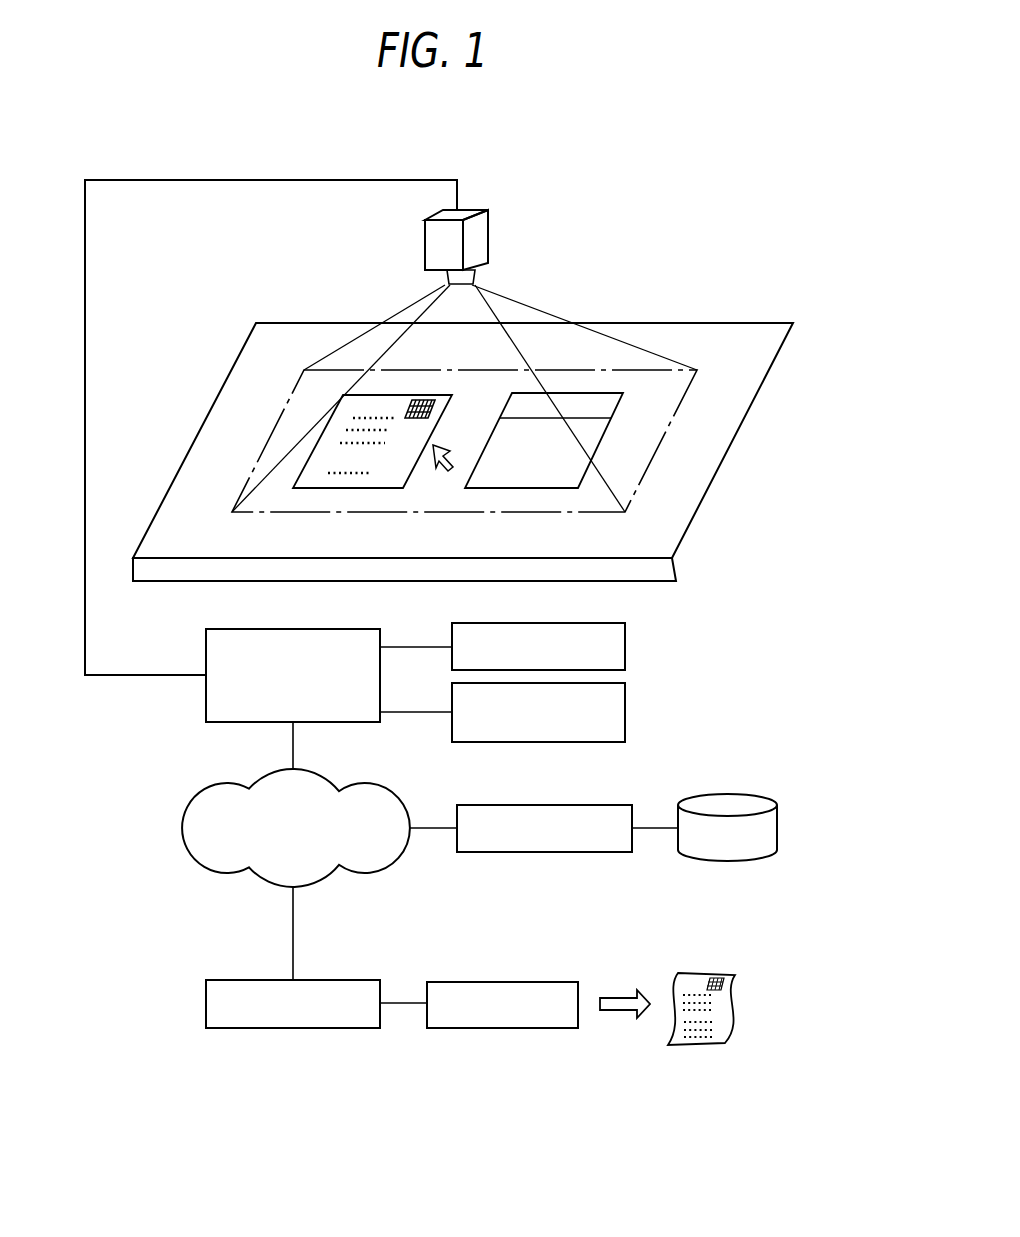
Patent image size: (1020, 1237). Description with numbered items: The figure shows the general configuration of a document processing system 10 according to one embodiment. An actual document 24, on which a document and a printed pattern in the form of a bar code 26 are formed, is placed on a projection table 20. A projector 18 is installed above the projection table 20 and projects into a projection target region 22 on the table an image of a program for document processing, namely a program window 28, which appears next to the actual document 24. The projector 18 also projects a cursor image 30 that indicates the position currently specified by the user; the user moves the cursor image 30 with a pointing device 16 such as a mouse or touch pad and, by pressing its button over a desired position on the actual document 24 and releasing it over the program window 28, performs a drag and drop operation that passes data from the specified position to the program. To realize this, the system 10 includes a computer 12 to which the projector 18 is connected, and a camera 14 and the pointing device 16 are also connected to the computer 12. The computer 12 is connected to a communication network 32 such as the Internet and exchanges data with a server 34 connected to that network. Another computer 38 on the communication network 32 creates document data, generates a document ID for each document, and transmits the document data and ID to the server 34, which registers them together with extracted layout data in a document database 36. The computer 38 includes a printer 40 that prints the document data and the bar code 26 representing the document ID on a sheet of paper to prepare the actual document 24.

The document processing system 10 is at (142, 926).
The computer 12 is at (206, 655).
The camera 14 is at (625, 645).
The pointing device 16 is at (625, 705).
The projector 18 is at (490, 233).
The projection table 20 is at (207, 415).
The projection target region 22 is at (668, 428).
The actual document 24 is at (365, 488).
The bar code 26 is at (430, 396).
The program window 28 is at (560, 488).
The cursor image 30 is at (450, 471).
The communication network 32 is at (183, 825).
The server 34 is at (545, 805).
The document database 36 is at (727, 795).
The computer 38 is at (327, 980).
The printer 40 is at (505, 982).